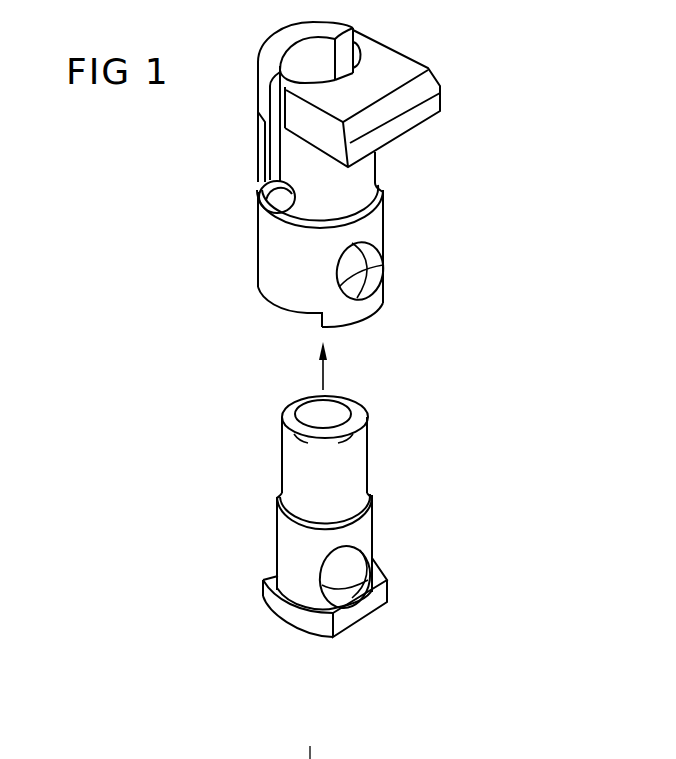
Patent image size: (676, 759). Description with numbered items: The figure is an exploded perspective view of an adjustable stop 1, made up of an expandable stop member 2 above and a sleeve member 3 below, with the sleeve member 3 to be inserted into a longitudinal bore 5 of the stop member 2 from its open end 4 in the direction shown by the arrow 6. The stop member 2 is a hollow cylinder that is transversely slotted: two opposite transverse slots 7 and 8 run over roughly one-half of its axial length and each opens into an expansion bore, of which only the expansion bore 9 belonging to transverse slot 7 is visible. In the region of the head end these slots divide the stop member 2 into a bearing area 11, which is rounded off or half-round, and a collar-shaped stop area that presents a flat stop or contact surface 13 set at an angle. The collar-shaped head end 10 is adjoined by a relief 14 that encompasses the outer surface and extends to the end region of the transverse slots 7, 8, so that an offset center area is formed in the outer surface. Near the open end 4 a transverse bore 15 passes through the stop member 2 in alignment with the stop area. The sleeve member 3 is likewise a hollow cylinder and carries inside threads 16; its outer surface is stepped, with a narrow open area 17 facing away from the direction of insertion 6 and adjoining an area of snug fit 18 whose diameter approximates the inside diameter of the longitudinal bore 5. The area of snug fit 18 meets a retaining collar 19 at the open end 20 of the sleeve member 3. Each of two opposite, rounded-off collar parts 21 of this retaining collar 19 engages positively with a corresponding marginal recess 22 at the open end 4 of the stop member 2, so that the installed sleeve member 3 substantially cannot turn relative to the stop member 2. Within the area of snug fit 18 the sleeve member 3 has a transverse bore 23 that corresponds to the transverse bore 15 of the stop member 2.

The adjustable stop 1 is at (460, 319).
The expandable stop member 2 is at (372, 229).
The sleeve member 3 is at (364, 531).
The open end 4 is at (278, 265).
The longitudinal bore 5 is at (323, 49).
The arrow 6 is at (318, 380).
The transverse slot 7 is at (275, 103).
The transverse slot 8 is at (345, 58).
The expansion bore 9 is at (264, 204).
The collar-shaped head end 10 is at (413, 58).
The bearing area 11 is at (267, 45).
The stop or contact surface 13 is at (428, 107).
The relief 14 is at (358, 173).
The transverse bore 15 is at (358, 268).
The inside threads 16 is at (340, 416).
The open area 17 is at (355, 458).
The area of snug fit 18 is at (264, 535).
The retaining collar 19 is at (384, 582).
The open end 20 is at (362, 610).
The collar parts 21 is at (280, 603).
The marginal recess 22 is at (318, 320).
The transverse bore 23 is at (340, 572).